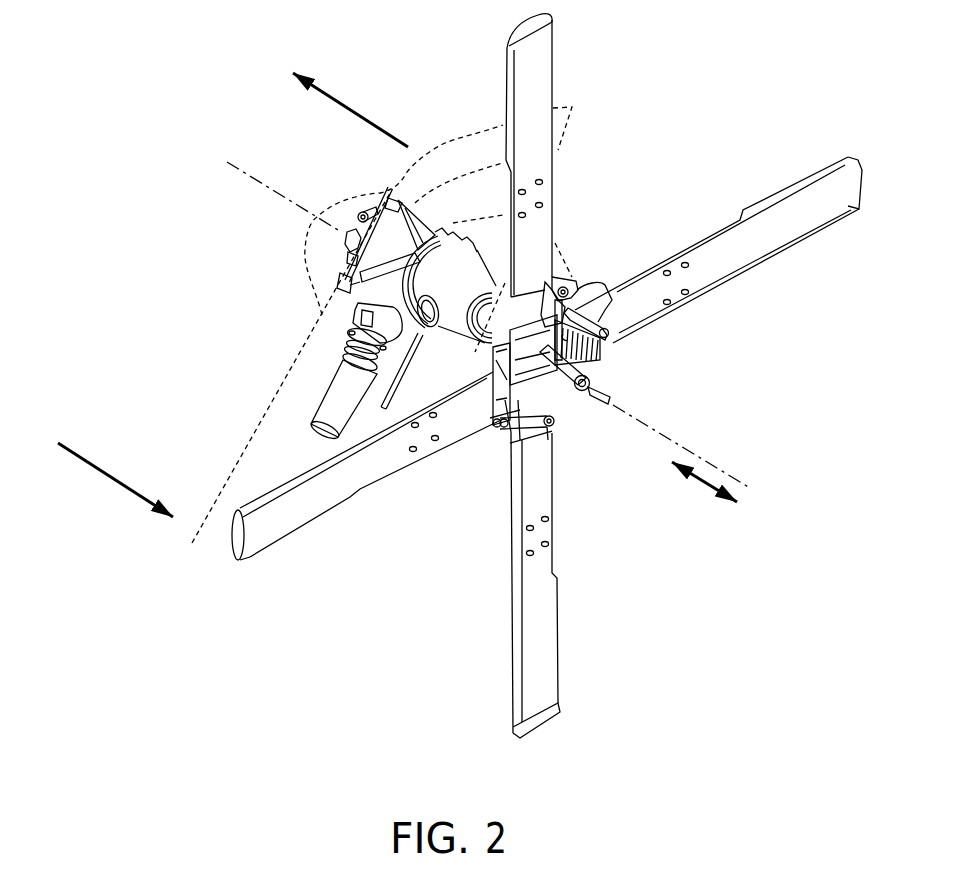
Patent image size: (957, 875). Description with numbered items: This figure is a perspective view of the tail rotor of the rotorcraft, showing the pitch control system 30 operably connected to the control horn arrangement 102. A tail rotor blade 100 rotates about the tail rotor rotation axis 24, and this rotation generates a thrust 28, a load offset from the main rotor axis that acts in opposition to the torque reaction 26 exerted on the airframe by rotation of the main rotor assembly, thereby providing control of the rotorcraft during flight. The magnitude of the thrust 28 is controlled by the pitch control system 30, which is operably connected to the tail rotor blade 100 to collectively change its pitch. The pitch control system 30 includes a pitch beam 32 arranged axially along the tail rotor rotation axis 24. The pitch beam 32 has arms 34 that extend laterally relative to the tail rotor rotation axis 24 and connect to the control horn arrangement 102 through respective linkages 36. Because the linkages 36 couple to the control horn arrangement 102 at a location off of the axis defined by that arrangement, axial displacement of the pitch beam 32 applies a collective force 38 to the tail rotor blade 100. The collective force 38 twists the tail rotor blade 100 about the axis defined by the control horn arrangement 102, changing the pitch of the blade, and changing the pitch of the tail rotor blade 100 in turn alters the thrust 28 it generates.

The tail rotor rotation axis 24 is at (697, 457).
The torque reaction 26 is at (108, 472).
The thrust 28 is at (355, 108).
The pitch control system 30 is at (582, 415).
The pitch beam 32 is at (606, 362).
The arms 34 is at (555, 395).
The linkages 36 is at (545, 373).
The collective force 38 is at (697, 482).
The tail rotor blade 100 is at (542, 72).
The control horn arrangement 102 is at (575, 253).